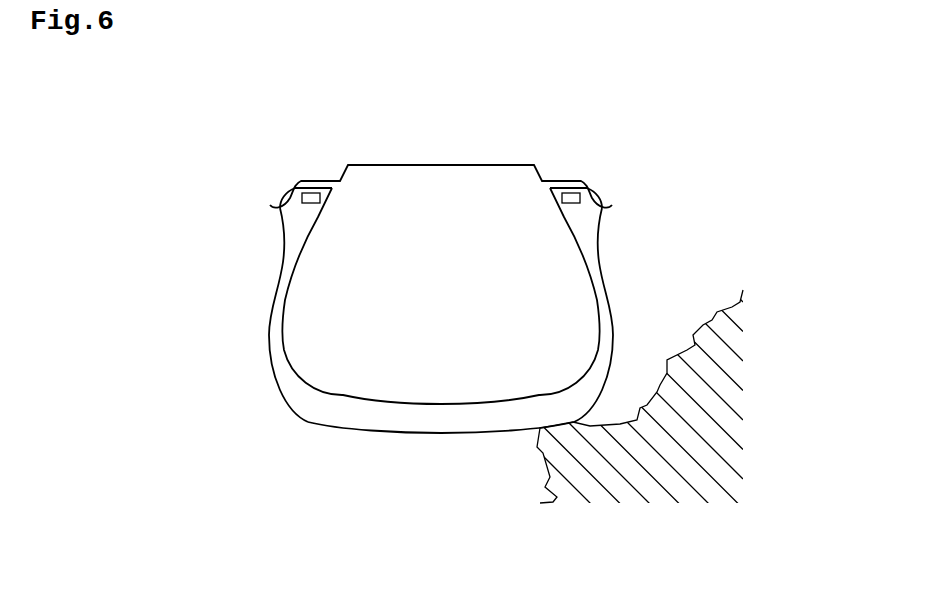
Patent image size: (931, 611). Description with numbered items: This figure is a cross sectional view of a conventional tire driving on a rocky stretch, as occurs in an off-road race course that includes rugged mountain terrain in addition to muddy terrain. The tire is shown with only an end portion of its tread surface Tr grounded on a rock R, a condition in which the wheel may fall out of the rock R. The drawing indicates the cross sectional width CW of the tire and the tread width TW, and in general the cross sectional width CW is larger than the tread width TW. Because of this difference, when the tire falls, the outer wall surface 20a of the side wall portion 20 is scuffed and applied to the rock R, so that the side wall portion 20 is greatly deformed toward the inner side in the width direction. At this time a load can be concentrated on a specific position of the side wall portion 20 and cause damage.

The side wall portion 20 is at (259, 308).
The outer wall surface 20a is at (613, 354).
The tread surface Tr is at (415, 433).
The rock R is at (702, 327).
The cross sectional width CW is at (613, 322).
The tread width TW is at (575, 419).